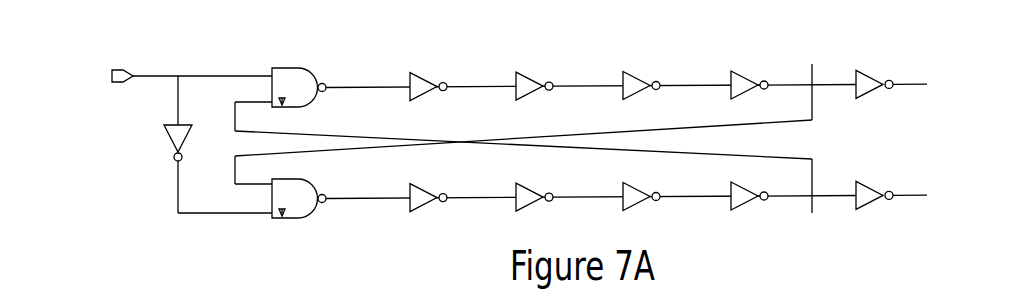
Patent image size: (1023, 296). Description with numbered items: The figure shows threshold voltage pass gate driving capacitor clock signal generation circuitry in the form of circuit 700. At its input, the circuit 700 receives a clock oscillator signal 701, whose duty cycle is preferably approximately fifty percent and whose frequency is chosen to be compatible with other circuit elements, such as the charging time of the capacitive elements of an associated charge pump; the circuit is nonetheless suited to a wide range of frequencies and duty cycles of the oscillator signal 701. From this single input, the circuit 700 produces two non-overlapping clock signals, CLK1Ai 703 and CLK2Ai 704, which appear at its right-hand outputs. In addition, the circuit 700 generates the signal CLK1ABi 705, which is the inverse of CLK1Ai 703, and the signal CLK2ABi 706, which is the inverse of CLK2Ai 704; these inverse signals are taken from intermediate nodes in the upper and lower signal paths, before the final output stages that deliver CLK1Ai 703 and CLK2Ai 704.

The circuit 700 is at (67, 157).
The clock oscillator signal 701 is at (42, 75).
The clock signal CLK1Ai 703 is at (963, 98).
The clock signal CLK2Ai 704 is at (963, 208).
The signal CLK1ABi 705 is at (857, 41).
The signal CLK2ABi 706 is at (853, 233).